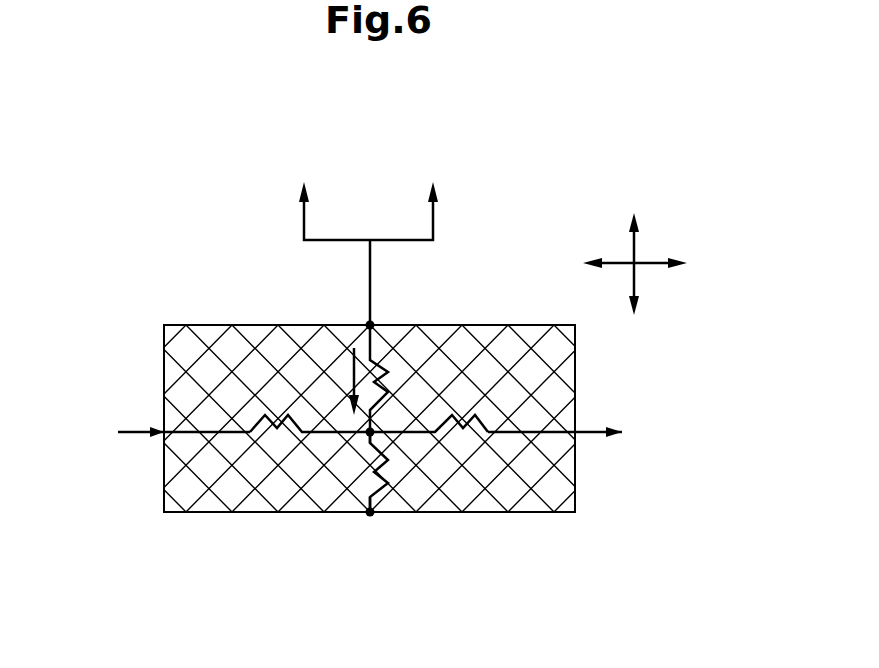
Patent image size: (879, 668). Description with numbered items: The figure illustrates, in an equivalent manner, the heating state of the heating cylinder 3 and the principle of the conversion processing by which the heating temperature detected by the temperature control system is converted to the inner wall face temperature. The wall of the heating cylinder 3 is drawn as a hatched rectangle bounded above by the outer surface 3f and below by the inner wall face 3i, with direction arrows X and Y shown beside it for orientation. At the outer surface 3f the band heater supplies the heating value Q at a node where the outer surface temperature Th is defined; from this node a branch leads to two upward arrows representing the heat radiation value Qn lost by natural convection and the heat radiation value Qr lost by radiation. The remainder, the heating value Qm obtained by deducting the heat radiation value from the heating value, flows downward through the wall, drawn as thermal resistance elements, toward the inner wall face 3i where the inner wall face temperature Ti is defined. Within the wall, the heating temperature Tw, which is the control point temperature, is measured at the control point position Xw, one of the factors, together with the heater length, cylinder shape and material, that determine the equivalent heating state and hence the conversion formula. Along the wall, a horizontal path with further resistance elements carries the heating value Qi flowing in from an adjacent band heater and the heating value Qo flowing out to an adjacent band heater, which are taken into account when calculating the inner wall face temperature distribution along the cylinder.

The heating cylinder 3 is at (217, 325).
The outer surface 3f is at (485, 325).
The inner wall face 3i is at (498, 512).
The heating value flowing from an adjacent heating unit Qi is at (165, 431).
The heating value flowing to an adjacent heating unit Qo is at (573, 432).
The heat radiation value by natural convection Qn is at (328, 196).
The heat radiation value by radiation Qr is at (407, 196).
The heating value after deducting heat radiation Qm is at (353, 358).
The heating value of the band heater Q is at (358, 367).
The outer surface temperature Th is at (387, 341).
The inner wall face temperature Ti is at (375, 526).
The heating temperature Tw is at (367, 446).
The control point position Xw is at (355, 538).
The X direction X is at (635, 243).
The Y direction Y is at (655, 265).